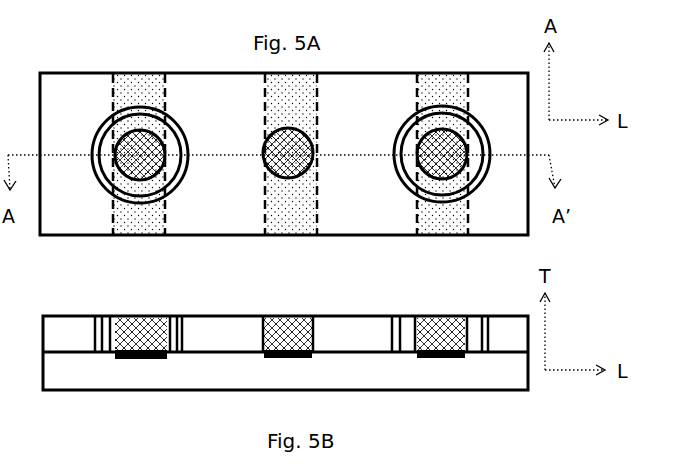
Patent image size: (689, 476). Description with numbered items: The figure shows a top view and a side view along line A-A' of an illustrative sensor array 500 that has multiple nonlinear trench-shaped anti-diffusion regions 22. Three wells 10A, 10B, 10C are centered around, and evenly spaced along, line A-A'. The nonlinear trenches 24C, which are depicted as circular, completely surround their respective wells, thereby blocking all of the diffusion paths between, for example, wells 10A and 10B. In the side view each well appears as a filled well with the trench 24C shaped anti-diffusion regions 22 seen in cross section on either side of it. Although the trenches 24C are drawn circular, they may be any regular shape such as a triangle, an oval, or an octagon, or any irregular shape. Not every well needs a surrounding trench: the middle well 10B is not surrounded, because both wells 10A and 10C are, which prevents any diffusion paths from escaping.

In FIG. 5A, the semiconductor device 500 is at (72, 38).
In FIG. 5B, the semiconductor device 500 is at (98, 428).
In FIG. 5A, the well 10A is at (120, 175).
In FIG. 5B, the well 10A is at (128, 317).
In FIG. 5A, the well 10B is at (280, 176).
In FIG. 5B, the well 10B is at (288, 317).
In FIG. 5A, the well 10C is at (422, 177).
In FIG. 5B, the well 10C is at (440, 317).
In FIG. 5A, the anti-diffusion region 22 is at (180, 185).
In FIG. 5B, the anti-diffusion region 22 is at (182, 315).
In FIG. 5A, the nonlinear trench 24C is at (442, 154).
In FIG. 5B, the nonlinear trench 24C is at (441, 334).